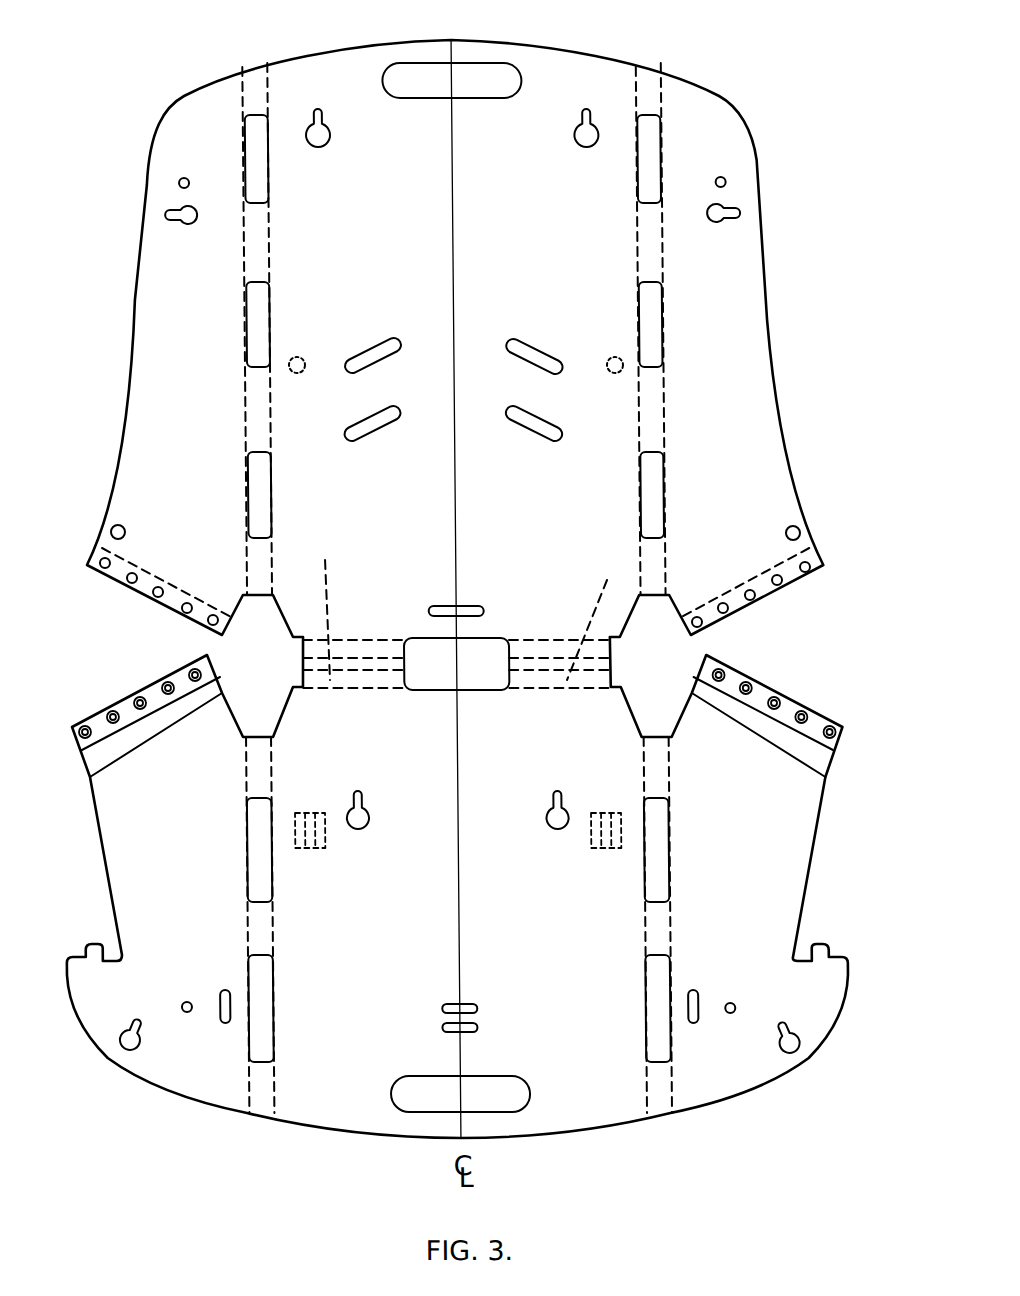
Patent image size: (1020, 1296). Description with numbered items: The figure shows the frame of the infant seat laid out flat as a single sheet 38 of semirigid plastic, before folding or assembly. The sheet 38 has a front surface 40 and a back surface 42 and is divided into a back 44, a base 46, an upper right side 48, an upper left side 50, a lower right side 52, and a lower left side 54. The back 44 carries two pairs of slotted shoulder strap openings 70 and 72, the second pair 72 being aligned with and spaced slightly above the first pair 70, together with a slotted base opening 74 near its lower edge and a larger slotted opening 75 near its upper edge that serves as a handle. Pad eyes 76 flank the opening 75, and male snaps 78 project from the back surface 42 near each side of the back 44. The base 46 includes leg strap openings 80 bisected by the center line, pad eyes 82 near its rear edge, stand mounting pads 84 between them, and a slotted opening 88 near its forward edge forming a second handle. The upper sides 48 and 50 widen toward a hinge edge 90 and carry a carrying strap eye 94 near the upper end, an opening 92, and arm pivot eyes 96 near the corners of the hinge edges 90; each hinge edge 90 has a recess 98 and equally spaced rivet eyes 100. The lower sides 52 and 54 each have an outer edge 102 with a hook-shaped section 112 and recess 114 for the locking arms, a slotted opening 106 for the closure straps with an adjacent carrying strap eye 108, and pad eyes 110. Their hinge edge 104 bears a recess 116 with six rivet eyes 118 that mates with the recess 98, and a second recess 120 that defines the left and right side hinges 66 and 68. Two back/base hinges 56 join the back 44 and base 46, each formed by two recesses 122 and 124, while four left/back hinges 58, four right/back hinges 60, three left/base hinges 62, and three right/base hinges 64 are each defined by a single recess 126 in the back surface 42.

The sheet 38 is at (148, 71).
The front surface 40 is at (756, 293).
The back surface 42 is at (743, 233).
The back 44 is at (582, 69).
The base 46 is at (400, 1136).
The upper right side 48 is at (788, 333).
The upper left side 50 is at (125, 346).
The lower right side 52 is at (735, 1112).
The lower left side 54 is at (190, 1112).
The back/base hinges 56 is at (358, 658).
The left/back hinges 58 is at (258, 78).
The right/back hinges 60 is at (648, 77).
The left/base hinges 62 is at (244, 783).
The right/base hinges 64 is at (655, 767).
The left side hinge 66 is at (219, 683).
The right side hinge 68 is at (684, 683).
The shoulder strap openings 70 is at (384, 403).
The shoulder strap openings 72 is at (403, 340).
The slotted base opening 74 is at (460, 603).
The slotted opening 75 is at (494, 70).
The pad eyes 76 is at (321, 118).
The male snaps 78 is at (296, 357).
The leg strap openings 80 is at (462, 1030).
The pad eyes 82 is at (357, 793).
The stand mounting pads 84 is at (321, 845).
The slotted opening 88 is at (505, 1103).
The hinge edge 90 is at (128, 593).
The opening 92 is at (183, 215).
The carrying strap eye 94 is at (184, 180).
The arm pivot eyes 96 is at (118, 525).
The recess 98 is at (167, 587).
The rivet eyes 100 is at (105, 560).
The outer edge 102 is at (94, 878).
The hinge edge 104 is at (108, 693).
The slotted opening 106 is at (225, 967).
The carrying strap eye 108 is at (178, 1012).
The pad eyes 110 is at (146, 993).
The hook-shaped section 112 is at (95, 1037).
The recess 114 is at (93, 946).
The recess 116 is at (209, 660).
The rivet eyes 118 is at (191, 675).
The second recess 120 is at (120, 737).
The recess 122 is at (322, 580).
The recess 124 is at (603, 585).
The recess 126 is at (246, 88).